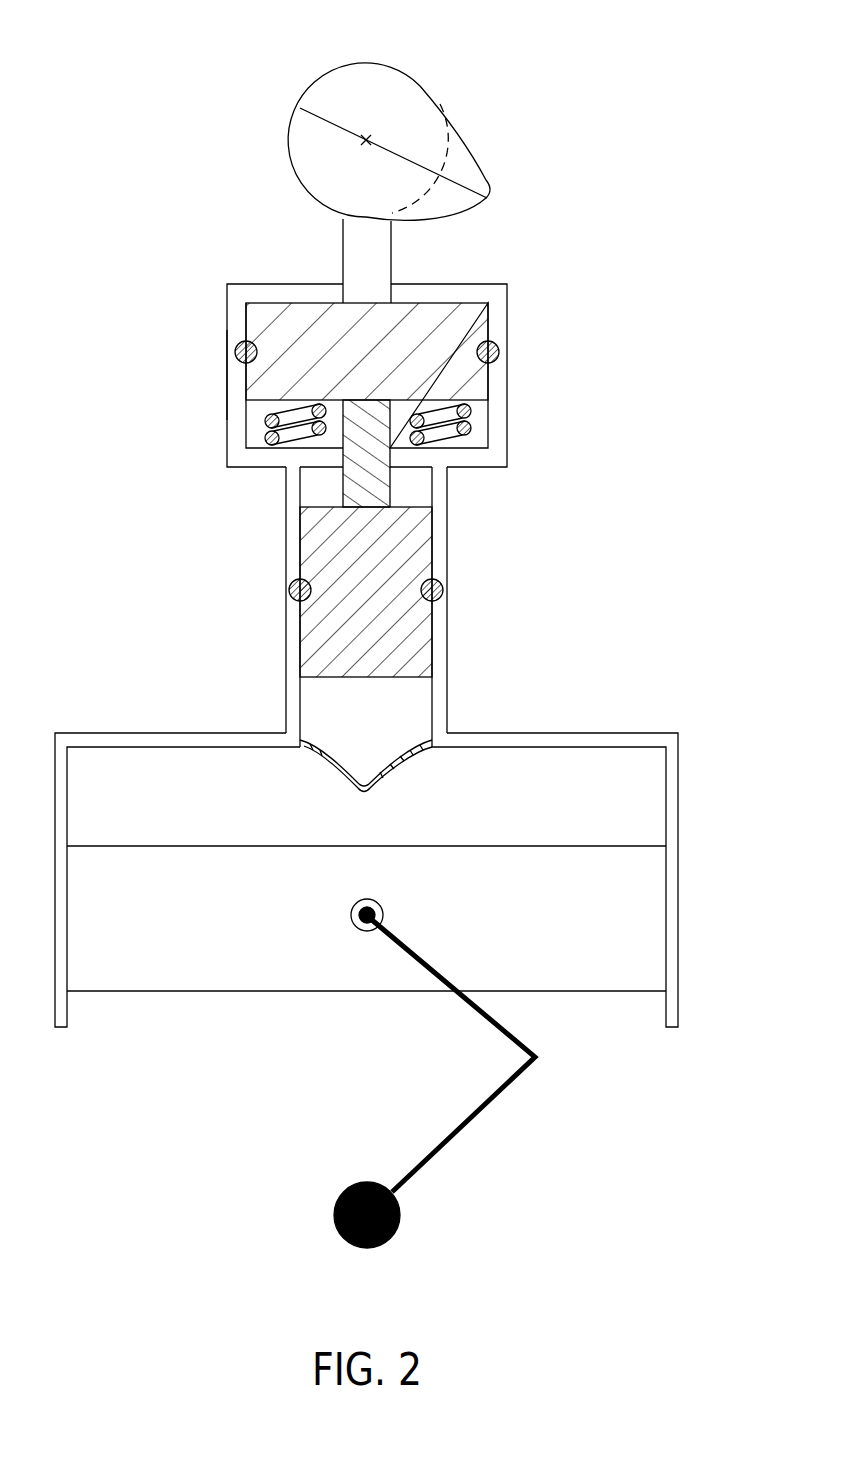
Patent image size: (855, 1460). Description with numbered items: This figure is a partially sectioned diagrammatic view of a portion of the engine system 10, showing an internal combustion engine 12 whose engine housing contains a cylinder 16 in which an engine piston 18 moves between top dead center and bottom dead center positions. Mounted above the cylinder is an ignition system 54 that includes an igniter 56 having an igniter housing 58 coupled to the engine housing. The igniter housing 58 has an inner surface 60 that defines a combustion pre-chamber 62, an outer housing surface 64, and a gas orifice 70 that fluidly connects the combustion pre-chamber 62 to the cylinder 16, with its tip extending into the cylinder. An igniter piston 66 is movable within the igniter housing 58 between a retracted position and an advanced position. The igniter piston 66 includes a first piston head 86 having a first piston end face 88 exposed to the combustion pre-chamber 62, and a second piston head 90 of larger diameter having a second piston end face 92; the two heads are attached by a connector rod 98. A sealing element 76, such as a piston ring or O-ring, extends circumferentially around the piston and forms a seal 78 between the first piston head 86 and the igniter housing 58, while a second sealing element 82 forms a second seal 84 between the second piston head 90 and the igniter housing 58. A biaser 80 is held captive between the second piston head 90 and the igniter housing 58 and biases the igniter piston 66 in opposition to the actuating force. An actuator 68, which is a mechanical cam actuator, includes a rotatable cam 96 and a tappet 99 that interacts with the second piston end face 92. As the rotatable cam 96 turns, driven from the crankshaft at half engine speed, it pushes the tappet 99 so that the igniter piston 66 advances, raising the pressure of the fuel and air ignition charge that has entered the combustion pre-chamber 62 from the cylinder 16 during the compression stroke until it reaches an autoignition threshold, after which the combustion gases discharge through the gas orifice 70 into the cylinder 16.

The engine system 10 is at (725, 553).
The internal combustion engine 12 is at (700, 727).
The cylinder 16 is at (595, 778).
The piston 18 is at (611, 897).
The ignition system 54 is at (605, 336).
The igniter 56 is at (226, 446).
The igniter housing 58 is at (508, 291).
The inner surface 60 is at (307, 722).
The combustion pre-chamber 62 is at (400, 703).
The outer housing surface 64 is at (458, 644).
The igniter piston 66 is at (434, 536).
The actuator 68 is at (500, 136).
The gas orifice 70 is at (330, 760).
The sealing element 76 is at (290, 590).
The seal 78 is at (280, 574).
The biaser 80 is at (461, 438).
The second sealing element 82 is at (236, 352).
The second seal 84 is at (220, 372).
The first piston head 86 is at (318, 622).
The first piston end face 88 is at (365, 678).
The second piston head 90 is at (257, 320).
The second piston end face 92 is at (313, 303).
The rotatable cam 96 is at (412, 70).
The connector rod 98 is at (343, 478).
The tappet 99 is at (392, 248).